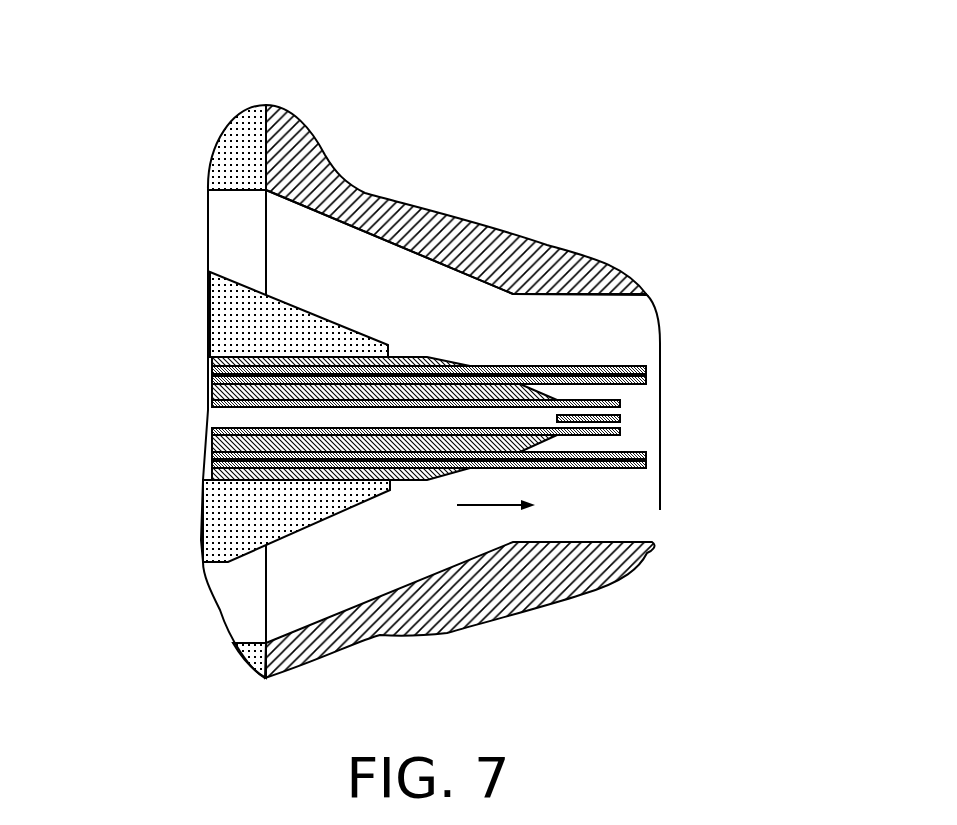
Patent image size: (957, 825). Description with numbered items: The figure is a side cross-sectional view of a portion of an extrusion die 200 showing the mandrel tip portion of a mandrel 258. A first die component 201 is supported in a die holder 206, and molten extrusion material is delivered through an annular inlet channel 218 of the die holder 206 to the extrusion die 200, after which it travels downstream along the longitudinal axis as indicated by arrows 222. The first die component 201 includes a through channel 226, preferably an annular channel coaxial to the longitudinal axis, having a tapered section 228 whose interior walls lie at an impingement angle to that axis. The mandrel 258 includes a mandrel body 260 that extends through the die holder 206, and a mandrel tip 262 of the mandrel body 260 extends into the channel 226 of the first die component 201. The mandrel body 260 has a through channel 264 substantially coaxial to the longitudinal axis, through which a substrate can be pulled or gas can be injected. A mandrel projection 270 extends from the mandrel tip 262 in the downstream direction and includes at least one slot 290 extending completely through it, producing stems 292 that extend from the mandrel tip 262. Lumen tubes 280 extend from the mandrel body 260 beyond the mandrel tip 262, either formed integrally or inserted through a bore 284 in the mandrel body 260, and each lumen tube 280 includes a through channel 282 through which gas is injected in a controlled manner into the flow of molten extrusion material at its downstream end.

The extrusion die 200 is at (758, 158).
The first die component 201 is at (305, 133).
The die holder 206 is at (237, 123).
The annular inlet channel 218 is at (217, 237).
The arrows indicating downstream direction 222 is at (495, 507).
The through channel 226 is at (303, 248).
The tapered section 228 is at (398, 220).
The mandrel 258 is at (480, 340).
The mandrel body 260 is at (210, 360).
The mandrel tip 262 is at (407, 478).
The through channel 264 is at (212, 410).
The mandrel projection 270 is at (580, 410).
The lumen tube 280 is at (615, 367).
The through channel 282 is at (212, 375).
The bore 284 is at (328, 363).
The slot 290 is at (610, 417).
The stem 292 is at (610, 433).